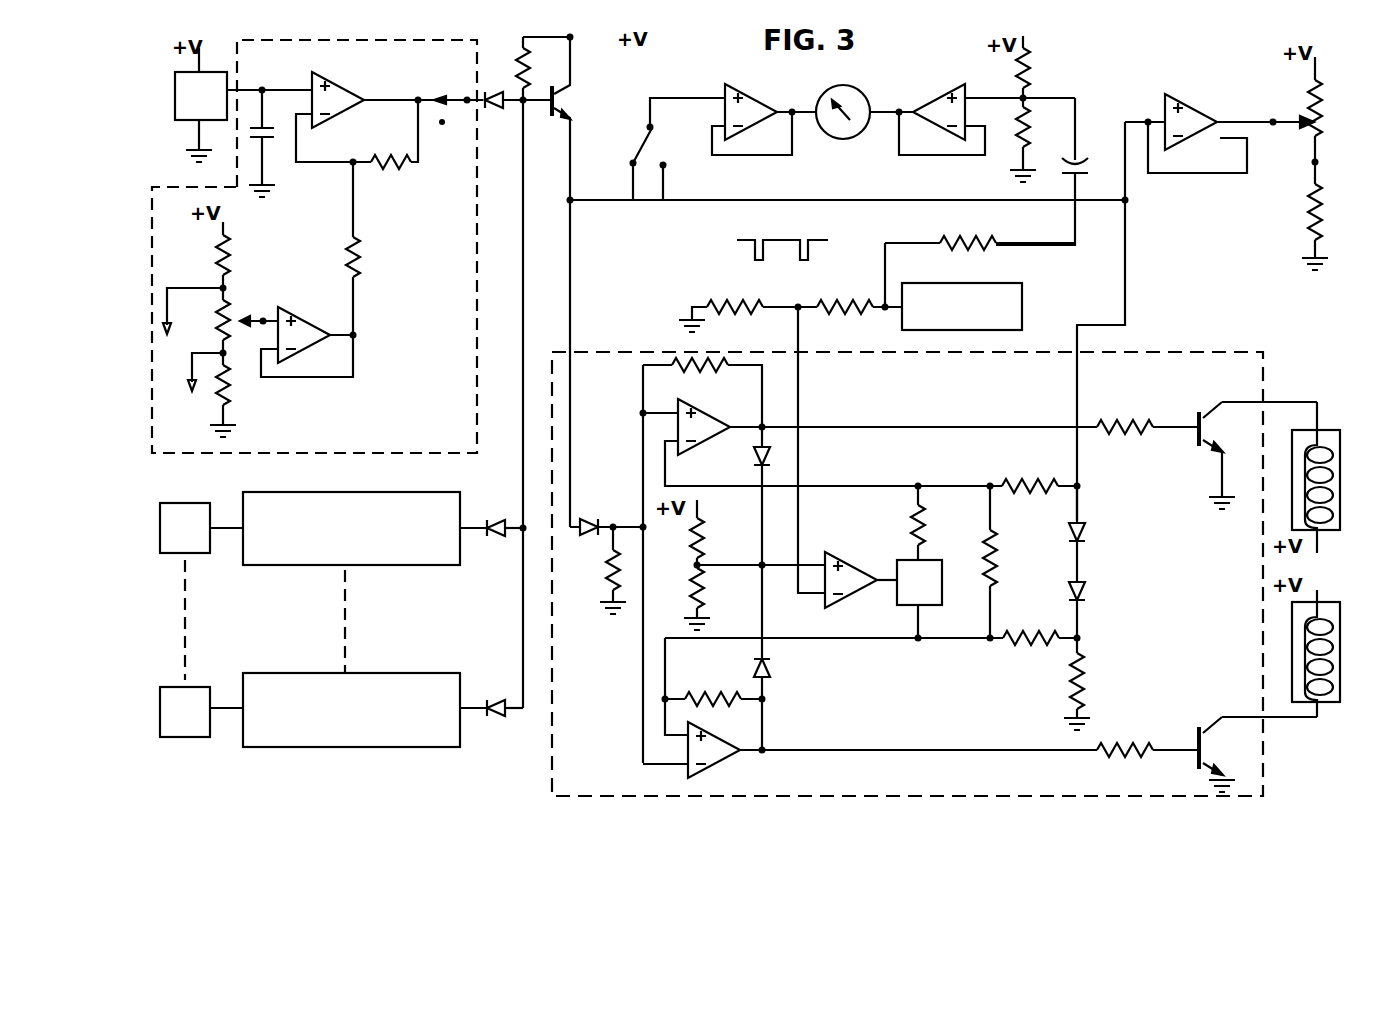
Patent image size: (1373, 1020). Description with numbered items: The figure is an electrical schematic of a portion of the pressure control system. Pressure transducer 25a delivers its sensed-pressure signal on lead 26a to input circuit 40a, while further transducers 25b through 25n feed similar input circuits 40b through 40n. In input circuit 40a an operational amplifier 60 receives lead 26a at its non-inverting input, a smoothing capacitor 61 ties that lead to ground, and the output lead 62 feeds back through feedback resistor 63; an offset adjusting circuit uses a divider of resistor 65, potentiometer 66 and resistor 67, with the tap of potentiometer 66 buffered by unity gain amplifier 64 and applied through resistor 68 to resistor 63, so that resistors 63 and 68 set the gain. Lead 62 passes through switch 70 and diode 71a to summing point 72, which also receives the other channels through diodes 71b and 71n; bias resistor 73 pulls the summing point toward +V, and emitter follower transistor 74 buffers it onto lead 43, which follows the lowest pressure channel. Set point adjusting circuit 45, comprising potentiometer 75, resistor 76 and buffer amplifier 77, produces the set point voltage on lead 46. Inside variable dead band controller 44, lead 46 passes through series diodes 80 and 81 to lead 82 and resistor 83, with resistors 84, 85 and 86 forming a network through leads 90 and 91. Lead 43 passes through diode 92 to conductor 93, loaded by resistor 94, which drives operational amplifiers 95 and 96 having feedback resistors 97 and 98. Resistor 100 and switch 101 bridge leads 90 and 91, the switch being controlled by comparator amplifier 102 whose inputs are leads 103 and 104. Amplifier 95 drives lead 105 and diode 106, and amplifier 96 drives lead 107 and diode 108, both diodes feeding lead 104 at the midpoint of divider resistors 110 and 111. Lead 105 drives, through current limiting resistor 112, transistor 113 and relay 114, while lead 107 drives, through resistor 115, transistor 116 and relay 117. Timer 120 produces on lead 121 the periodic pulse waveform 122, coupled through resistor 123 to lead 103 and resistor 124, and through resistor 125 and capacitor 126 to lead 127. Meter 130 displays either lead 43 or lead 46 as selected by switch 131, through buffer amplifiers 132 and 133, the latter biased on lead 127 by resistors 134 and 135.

The pressure transducer 25a is at (180, 99).
The pressure transducer 25b is at (180, 502).
The pressure transducer 25n is at (195, 683).
The lead 26a is at (243, 88).
The input circuit 40a is at (334, 246).
The input circuit 40b is at (380, 492).
The input circuit 40n is at (390, 673).
The lead 43 is at (570, 277).
The variable dead band controller 44 is at (620, 350).
The set point adjusting circuit 45 is at (1272, 88).
The lead 46 is at (1125, 262).
The operational amplifier 60 is at (338, 93).
The filtering or smoothing capacitor 61 is at (266, 129).
The lead 62 is at (382, 98).
The feedback resistor 63 is at (387, 160).
The amplifier 64 is at (302, 312).
The resistor 65 is at (225, 261).
The potentiometer 66 is at (229, 304).
The resistor 67 is at (228, 382).
The resistor 68 is at (357, 269).
The switch 70 is at (452, 95).
The diode 71a is at (493, 92).
The diode 71b is at (500, 521).
The diode 71n is at (500, 697).
The summing point 72 is at (523, 318).
The bias resistor 73 is at (527, 72).
The NPN transistor 74 is at (573, 95).
The potentiometer 75 is at (1310, 125).
The resistor 76 is at (1307, 203).
The unity gain buffer amplifier 77 is at (1193, 112).
The diode 80 is at (1097, 530).
The diode 81 is at (1097, 592).
The lead 82 is at (1090, 639).
The resistor 83 is at (1090, 690).
The resistor 84 is at (1020, 481).
The resistor 85 is at (998, 572).
The resistor 86 is at (1025, 634).
The lead 90 is at (950, 473).
The lead 91 is at (937, 640).
The diode 92 is at (585, 517).
The conductor 93 is at (643, 443).
The load resistor 94 is at (604, 583).
The operational amplifier 95 is at (708, 414).
The operational amplifier 96 is at (724, 758).
The feedback resistor 97 is at (692, 375).
The feedback resistor 98 is at (706, 694).
The resistor 100 is at (927, 537).
The switch 101 is at (897, 608).
The operational amplifier 102 is at (862, 548).
The lead 103 is at (802, 537).
The lead 104 is at (757, 568).
The lead 105 is at (913, 427).
The diode 106 is at (748, 456).
The lead 107 is at (885, 748).
The diode 108 is at (770, 654).
The resistor 110 is at (704, 539).
The resistor 111 is at (688, 590).
The current limiting resistor 112 is at (1120, 423).
The NPN transistor 113 is at (1208, 403).
The relay 114 is at (1331, 433).
The current limiting resistor 115 is at (1118, 745).
The NPN transistor 116 is at (1206, 725).
The relay 117 is at (1328, 715).
The timer 120 is at (1005, 282).
The lead 121 is at (885, 312).
The waveform 122 is at (738, 240).
The resistor 123 is at (850, 302).
The resistor 124 is at (731, 300).
The resistor 125 is at (980, 243).
The capacitor 126 is at (1093, 162).
The lead 127 is at (1057, 97).
The meter 130 is at (844, 85).
The switch 131 is at (645, 139).
The unity gain buffer amplifier 132 is at (748, 93).
The unity gain buffer amplifier 133 is at (937, 93).
The bias resistor 134 is at (1032, 68).
The bias resistor 135 is at (1032, 138).